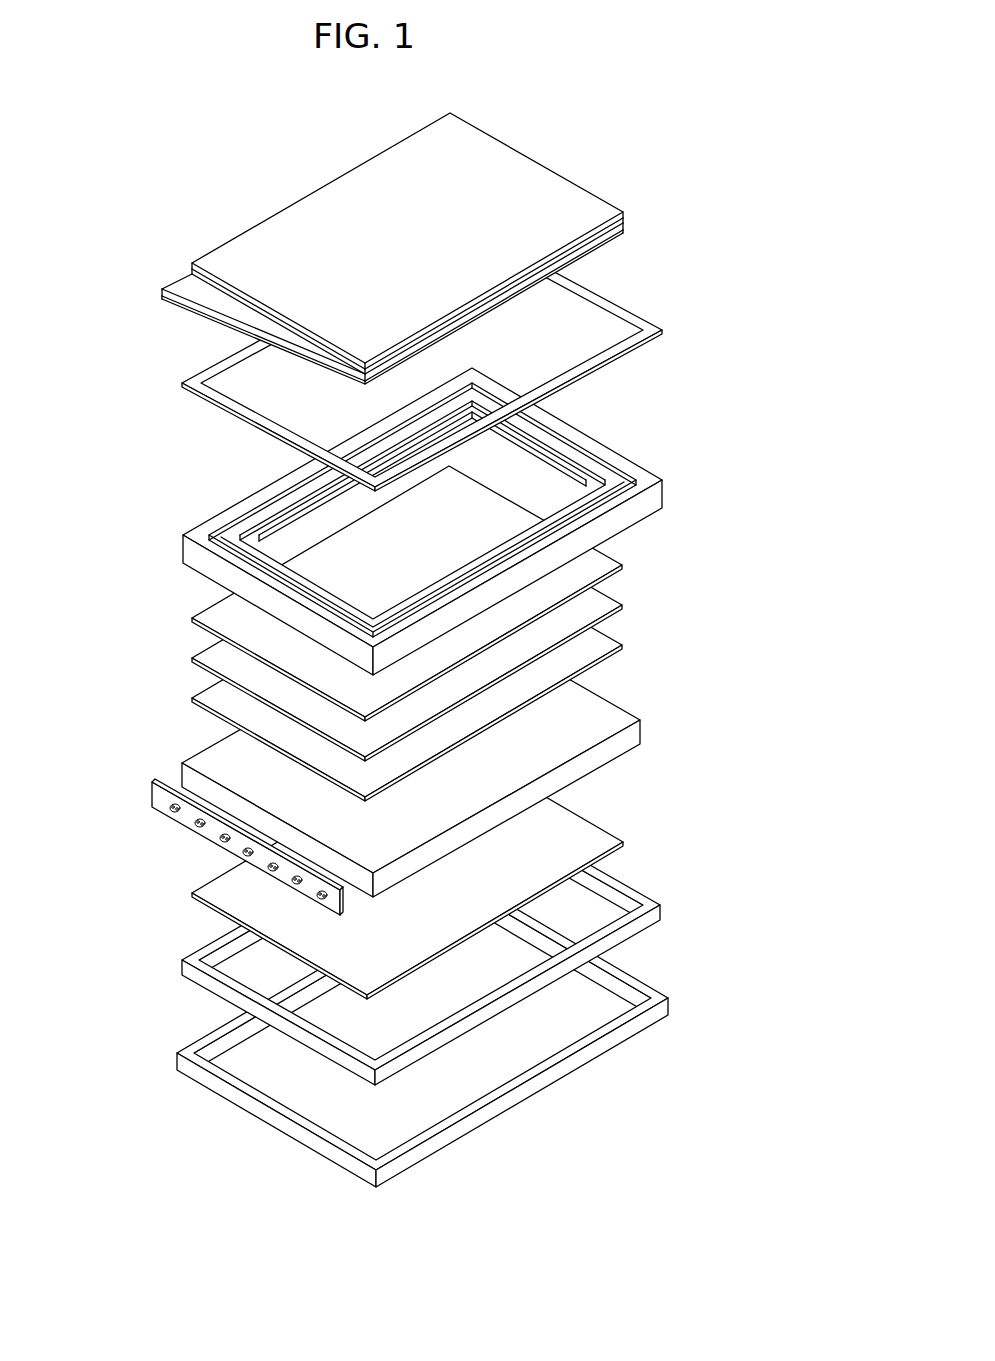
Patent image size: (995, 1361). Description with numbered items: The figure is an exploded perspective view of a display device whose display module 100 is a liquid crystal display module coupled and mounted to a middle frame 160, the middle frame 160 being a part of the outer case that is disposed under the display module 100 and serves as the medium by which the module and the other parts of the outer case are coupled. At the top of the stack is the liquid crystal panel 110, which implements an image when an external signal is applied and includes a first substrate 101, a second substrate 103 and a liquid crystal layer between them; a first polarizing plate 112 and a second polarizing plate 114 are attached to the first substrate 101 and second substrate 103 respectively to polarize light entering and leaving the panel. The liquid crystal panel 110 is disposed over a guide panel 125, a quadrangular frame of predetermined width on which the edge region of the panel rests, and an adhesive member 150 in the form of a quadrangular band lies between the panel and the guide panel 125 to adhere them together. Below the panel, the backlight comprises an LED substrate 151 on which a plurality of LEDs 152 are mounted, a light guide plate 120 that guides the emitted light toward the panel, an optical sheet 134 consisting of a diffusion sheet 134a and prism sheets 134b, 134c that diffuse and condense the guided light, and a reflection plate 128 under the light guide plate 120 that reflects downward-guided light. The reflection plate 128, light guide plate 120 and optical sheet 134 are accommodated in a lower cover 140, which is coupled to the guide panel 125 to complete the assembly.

The display module 100 is at (398, 650).
The liquid crystal panel 110 is at (334, 248).
The second polarizing plate 114 is at (240, 250).
The second substrate 103 is at (190, 267).
The first substrate 101 is at (187, 288).
The first polarizing plate 112 is at (360, 372).
The adhesive member 150 is at (633, 317).
The guide panel 125 is at (615, 460).
The optical sheet 134 is at (472, 633).
The diffusion sheet 134a is at (620, 652).
The prism sheet 134b is at (620, 612).
The prism sheet 134c is at (703, 660).
The light guide plate 120 is at (608, 712).
The LED substrate 151 is at (150, 800).
The LED 152 is at (175, 812).
The reflection plate 128 is at (583, 837).
The lower cover 140 is at (655, 917).
The middle frame 160 is at (662, 1010).